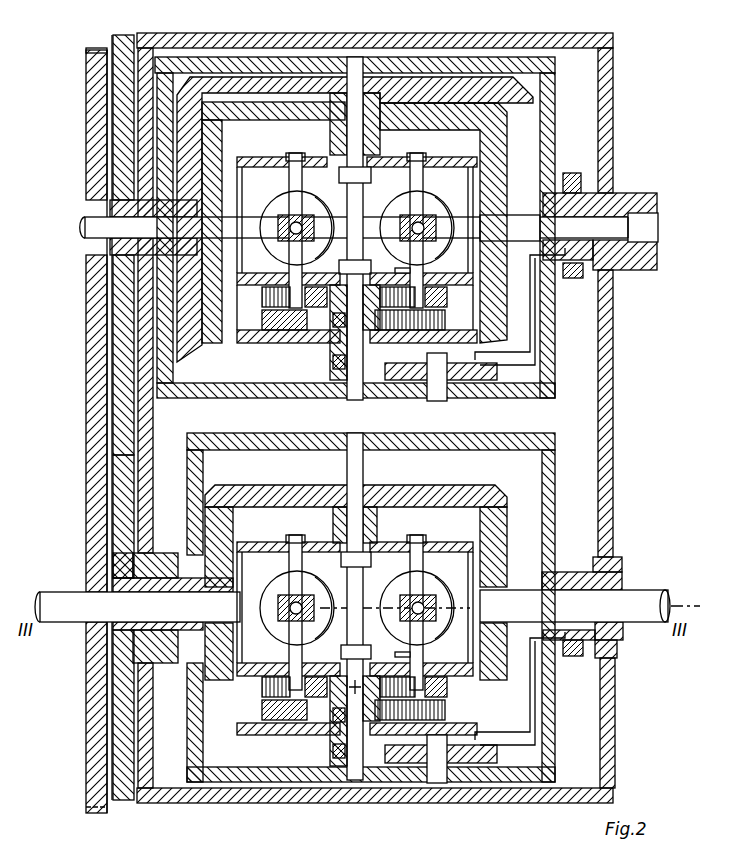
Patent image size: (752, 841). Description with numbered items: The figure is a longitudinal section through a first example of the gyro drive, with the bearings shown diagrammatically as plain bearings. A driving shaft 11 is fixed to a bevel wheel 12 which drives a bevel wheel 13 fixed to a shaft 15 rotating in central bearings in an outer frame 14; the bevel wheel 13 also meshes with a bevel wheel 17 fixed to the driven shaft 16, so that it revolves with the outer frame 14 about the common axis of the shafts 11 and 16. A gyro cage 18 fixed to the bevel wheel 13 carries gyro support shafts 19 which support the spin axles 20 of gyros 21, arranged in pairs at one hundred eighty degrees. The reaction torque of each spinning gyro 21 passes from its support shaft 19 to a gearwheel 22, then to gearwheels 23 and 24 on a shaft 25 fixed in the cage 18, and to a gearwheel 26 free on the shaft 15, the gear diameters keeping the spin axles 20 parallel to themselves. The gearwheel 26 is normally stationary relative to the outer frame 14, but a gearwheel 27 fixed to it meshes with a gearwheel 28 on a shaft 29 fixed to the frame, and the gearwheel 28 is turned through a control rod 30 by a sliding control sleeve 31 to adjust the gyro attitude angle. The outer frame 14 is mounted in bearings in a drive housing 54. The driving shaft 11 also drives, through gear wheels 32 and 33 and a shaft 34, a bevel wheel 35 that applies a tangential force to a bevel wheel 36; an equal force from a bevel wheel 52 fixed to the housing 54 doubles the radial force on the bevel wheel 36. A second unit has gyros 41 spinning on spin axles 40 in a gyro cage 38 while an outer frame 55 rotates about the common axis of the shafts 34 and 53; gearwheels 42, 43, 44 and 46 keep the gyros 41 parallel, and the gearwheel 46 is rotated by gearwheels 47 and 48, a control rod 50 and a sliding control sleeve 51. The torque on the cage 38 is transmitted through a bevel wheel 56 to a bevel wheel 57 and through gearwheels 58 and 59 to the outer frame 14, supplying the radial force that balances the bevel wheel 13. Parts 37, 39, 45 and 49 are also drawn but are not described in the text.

The driving shaft 11 is at (137, 607).
The bevel wheel 12 is at (215, 517).
The bevel wheel 13 is at (243, 485).
The outer frame 14 is at (408, 437).
The shaft 15 is at (362, 468).
The driven shaft 16 is at (575, 606).
The bevel wheel 17 is at (493, 537).
The gyro cage 18 is at (330, 545).
The gyro support shaft 19 is at (300, 568).
The spin axle 20 is at (293, 625).
The gyro 21 is at (362, 598).
The gearwheel 22 is at (440, 650).
The gearwheel 23 is at (365, 688).
The gearwheel 24 is at (425, 698).
The shaft 25 is at (400, 650).
The gearwheel 26 is at (333, 715).
The gearwheel 27 is at (333, 751).
The gearwheel 28 is at (403, 762).
The shaft 29 is at (445, 765).
The control rod 30 is at (532, 720).
The control sleeve 31 is at (568, 657).
The gear wheel 32 is at (97, 510).
The gear wheel 33 is at (97, 316).
The shaft 34 is at (369, 227).
The bevel wheel 35 is at (273, 222).
The bevel wheel 36 is at (262, 120).
The carrier plate 37 is at (360, 140).
The gyro cage 38 is at (304, 228).
The pivot pin 39 is at (300, 186).
The spin axle 40 is at (295, 240).
The gyro 41 is at (362, 219).
The gearwheel 42 is at (425, 305).
The gearwheel 43 is at (295, 298).
The gearwheel 44 is at (420, 340).
The stop 45 is at (400, 270).
The gearwheel 46 is at (333, 320).
The gearwheel 47 is at (333, 362).
The gearwheel 48 is at (400, 380).
The adjusting shaft 49 is at (442, 378).
The control rod 50 is at (530, 340).
The sliding control sleeve 51 is at (566, 283).
The bevel wheel 52 is at (493, 160).
The shaft 53 is at (510, 228).
The drive housing 54 is at (145, 552).
The outer frame 55 is at (548, 158).
The bevel wheel 56 is at (203, 80).
The bevel wheel 57 is at (177, 135).
The gearwheel 58 is at (120, 157).
The gearwheel 59 is at (130, 480).